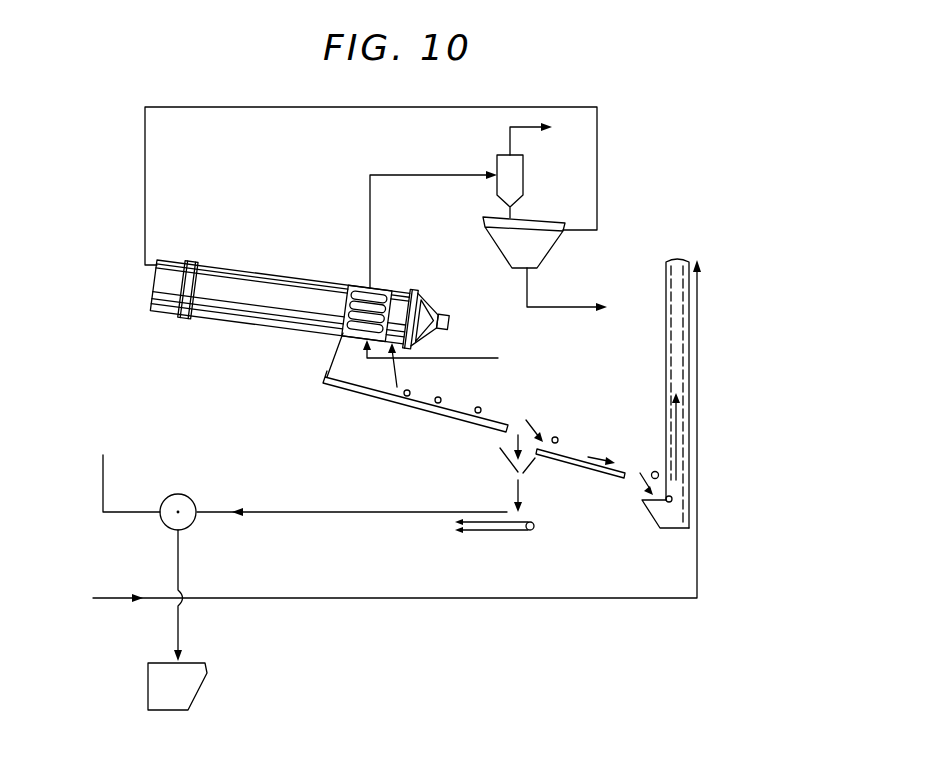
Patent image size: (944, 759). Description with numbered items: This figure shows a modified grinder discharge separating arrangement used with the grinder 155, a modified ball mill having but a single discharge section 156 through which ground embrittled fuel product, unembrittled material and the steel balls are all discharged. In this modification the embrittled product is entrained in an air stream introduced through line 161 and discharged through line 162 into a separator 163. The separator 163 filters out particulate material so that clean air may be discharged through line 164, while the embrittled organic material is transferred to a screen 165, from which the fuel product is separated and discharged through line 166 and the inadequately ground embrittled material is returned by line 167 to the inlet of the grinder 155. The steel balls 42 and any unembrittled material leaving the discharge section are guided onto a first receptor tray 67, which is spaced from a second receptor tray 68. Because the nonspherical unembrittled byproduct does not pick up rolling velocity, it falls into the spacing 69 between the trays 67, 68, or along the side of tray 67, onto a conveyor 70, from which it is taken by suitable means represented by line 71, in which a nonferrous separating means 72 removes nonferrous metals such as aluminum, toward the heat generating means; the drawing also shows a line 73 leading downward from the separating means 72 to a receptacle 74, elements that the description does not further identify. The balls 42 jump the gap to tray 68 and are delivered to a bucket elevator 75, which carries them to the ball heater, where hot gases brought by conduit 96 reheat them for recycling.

The grinder 155 is at (287, 247).
The discharge section 156 is at (388, 285).
The line 161 is at (503, 342).
The line 162 is at (416, 172).
The separator 163 is at (523, 181).
The line 164 is at (510, 127).
The screen 165 is at (556, 229).
The line 166 is at (568, 311).
The line 167 is at (597, 131).
The balls 42 is at (482, 407).
The first receptor tray 67 is at (428, 413).
The second receptor tray 68 is at (572, 465).
The spacing 69 is at (525, 432).
The conveyor 70 is at (498, 532).
The line 71 is at (103, 473).
The nonferrous separating means 72 is at (190, 495).
The discharge line 73 is at (177, 560).
The storage bin 74 is at (193, 685).
The bucket elevator 75 is at (672, 366).
The conduit 96 is at (698, 459).